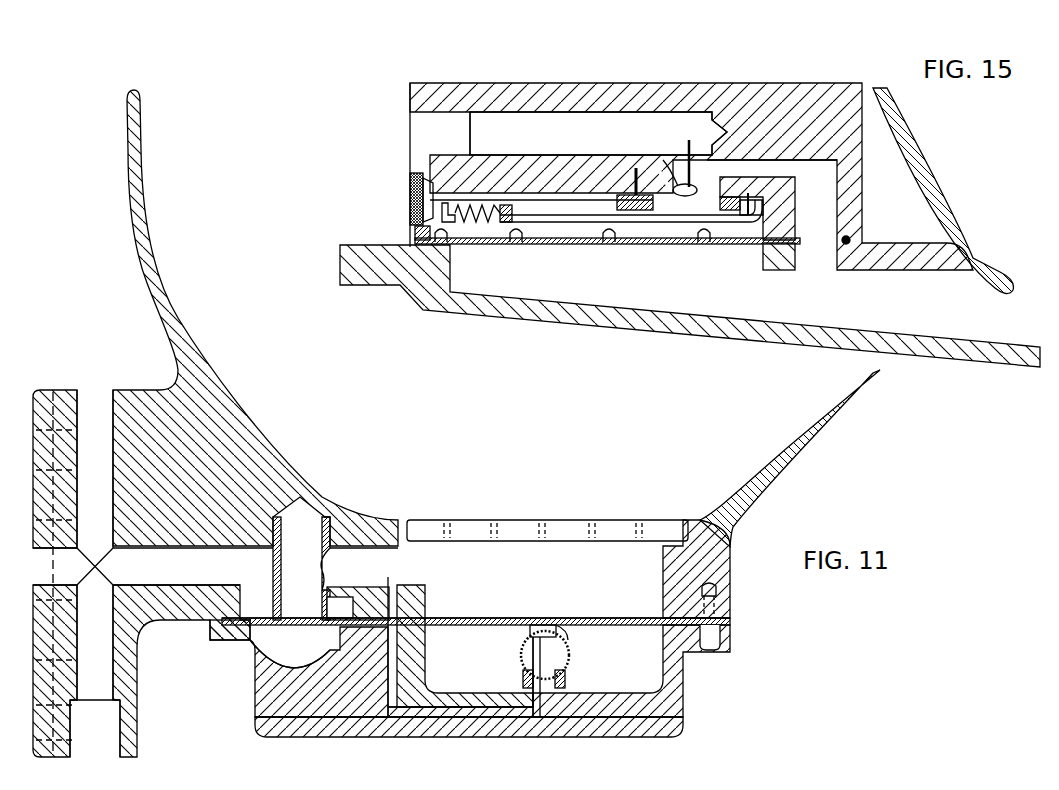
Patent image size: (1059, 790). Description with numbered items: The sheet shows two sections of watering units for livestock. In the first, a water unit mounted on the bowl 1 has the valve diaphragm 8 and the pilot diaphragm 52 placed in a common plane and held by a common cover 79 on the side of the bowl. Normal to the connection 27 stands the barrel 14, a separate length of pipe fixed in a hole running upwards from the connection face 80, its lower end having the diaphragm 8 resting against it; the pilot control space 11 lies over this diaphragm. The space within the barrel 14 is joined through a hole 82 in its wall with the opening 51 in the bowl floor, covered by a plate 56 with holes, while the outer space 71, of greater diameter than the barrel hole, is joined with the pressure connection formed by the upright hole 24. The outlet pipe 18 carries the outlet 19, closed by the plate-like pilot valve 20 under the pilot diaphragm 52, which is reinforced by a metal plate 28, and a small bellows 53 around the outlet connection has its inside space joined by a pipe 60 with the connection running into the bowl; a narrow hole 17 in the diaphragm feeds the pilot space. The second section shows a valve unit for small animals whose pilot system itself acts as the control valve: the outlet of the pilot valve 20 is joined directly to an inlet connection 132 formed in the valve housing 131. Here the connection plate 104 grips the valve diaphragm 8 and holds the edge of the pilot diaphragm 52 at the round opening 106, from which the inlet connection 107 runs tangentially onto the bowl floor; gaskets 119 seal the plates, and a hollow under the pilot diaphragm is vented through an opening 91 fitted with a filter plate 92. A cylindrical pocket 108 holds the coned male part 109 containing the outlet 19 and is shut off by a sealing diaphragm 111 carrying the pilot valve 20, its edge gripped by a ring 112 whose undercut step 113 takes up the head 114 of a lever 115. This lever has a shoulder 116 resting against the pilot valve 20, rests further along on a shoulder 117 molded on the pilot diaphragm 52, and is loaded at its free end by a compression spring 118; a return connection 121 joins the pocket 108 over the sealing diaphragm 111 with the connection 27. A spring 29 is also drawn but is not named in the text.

In FIG. 11, the bowl 1 is at (845, 405).
In FIG. 15, the bowl 1 is at (912, 158).
In FIG. 11, the valve diaphragm 8 is at (288, 620).
In FIG. 11, the pilot control space 11 is at (262, 633).
In FIG. 11, the barrel 14 is at (272, 565).
In FIG. 11, the narrow hole 17 is at (240, 622).
In FIG. 11, the outlet pipe 18 is at (380, 720).
In FIG. 11, the outlet 19 is at (560, 636).
In FIG. 15, the outlet 19 is at (663, 150).
In FIG. 11, the pilot valve 20 is at (544, 622).
In FIG. 15, the pilot valve 20 is at (683, 197).
In FIG. 11, the upright hole 24 is at (108, 577).
In FIG. 11, the connection 27 is at (364, 564).
In FIG. 15, the metal plate 28 is at (621, 246).
In FIG. 15, the spring 29 is at (476, 238).
In FIG. 11, the opening 51 is at (665, 580).
In FIG. 11, the pilot diaphragm 52 is at (476, 617).
In FIG. 15, the pilot diaphragm 52 is at (548, 245).
In FIG. 11, the bellows 53 is at (572, 660).
In FIG. 11, the plate 56 is at (563, 520).
In FIG. 11, the pipe 60 is at (450, 700).
In FIG. 11, the outer space 71 is at (358, 603).
In FIG. 11, the common cover 79 is at (318, 731).
In FIG. 11, the connection face 80 is at (728, 628).
In FIG. 11, the hole 82 is at (317, 562).
In FIG. 15, the opening 91 is at (425, 198).
In FIG. 15, the filter plate 92 is at (440, 215).
In FIG. 15, the connection plate 104 is at (408, 165).
In FIG. 15, the round opening 106 is at (768, 262).
In FIG. 15, the inlet connection 107 is at (838, 325).
In FIG. 15, the cylindrical pocket 108 is at (658, 172).
In FIG. 15, the coned male part 109 is at (688, 172).
In FIG. 15, the sealing diaphragm 111 is at (720, 205).
In FIG. 15, the ring 112 is at (620, 203).
In FIG. 15, the step 113 is at (765, 205).
In FIG. 15, the head 114 is at (742, 232).
In FIG. 15, the lever 115 is at (510, 218).
In FIG. 15, the shoulder 116 is at (684, 247).
In FIG. 15, the shoulder 117 is at (610, 247).
In FIG. 15, the compression spring 118 is at (492, 250).
In FIG. 15, the gaskets 119 is at (853, 240).
In FIG. 15, the return connection 121 is at (776, 179).
In FIG. 15, the valve housing 131 is at (760, 98).
In FIG. 15, the inlet connection 132 is at (562, 145).